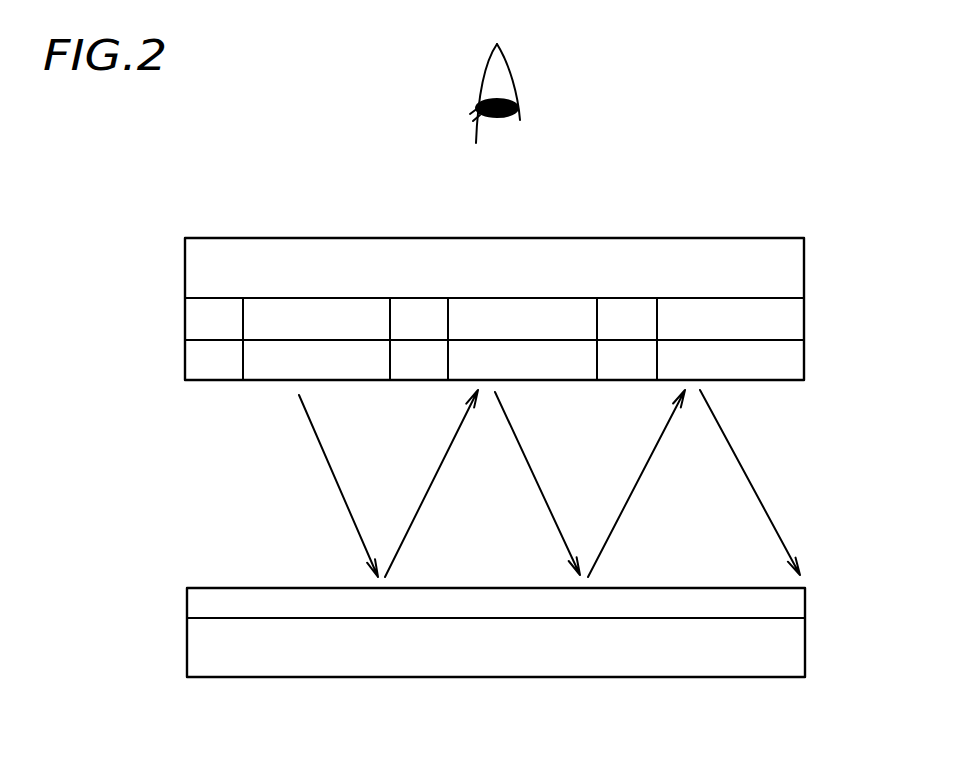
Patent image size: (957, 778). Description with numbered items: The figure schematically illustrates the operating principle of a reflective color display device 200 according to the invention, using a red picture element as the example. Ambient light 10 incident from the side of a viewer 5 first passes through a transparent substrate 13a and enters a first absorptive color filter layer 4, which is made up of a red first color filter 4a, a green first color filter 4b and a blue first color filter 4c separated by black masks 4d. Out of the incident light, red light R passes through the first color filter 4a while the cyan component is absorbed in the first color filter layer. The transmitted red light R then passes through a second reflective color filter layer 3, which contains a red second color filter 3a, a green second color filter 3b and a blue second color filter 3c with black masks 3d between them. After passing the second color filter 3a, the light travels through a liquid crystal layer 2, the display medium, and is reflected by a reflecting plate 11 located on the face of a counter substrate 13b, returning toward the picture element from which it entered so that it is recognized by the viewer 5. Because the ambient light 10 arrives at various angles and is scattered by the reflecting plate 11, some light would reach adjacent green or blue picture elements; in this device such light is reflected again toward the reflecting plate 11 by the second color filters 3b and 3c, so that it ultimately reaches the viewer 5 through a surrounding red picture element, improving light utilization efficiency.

The reflective color display device 200 is at (858, 135).
The ambient light 10 is at (227, 211).
The transparent substrate 13a is at (795, 262).
The first absorptive color filter layer 4 is at (797, 318).
The second reflective color filter layer 3 is at (797, 368).
The first color filter (red) 4a is at (316, 319).
The first color filter (green) 4b is at (522, 319).
The first color filter (blue) 4c is at (730, 319).
The second color filter (red) 3a is at (316, 360).
The second color filter (green) 3b is at (522, 360).
The second color filter (blue) 3c is at (730, 360).
The black mask 4d is at (188, 323).
The black mask 3d is at (188, 370).
The viewer 5 is at (470, 96).
The red light R is at (333, 475).
The liquid crystal layer 2 is at (793, 503).
The reflecting plate 11 is at (792, 605).
The counter substrate 13b is at (795, 660).